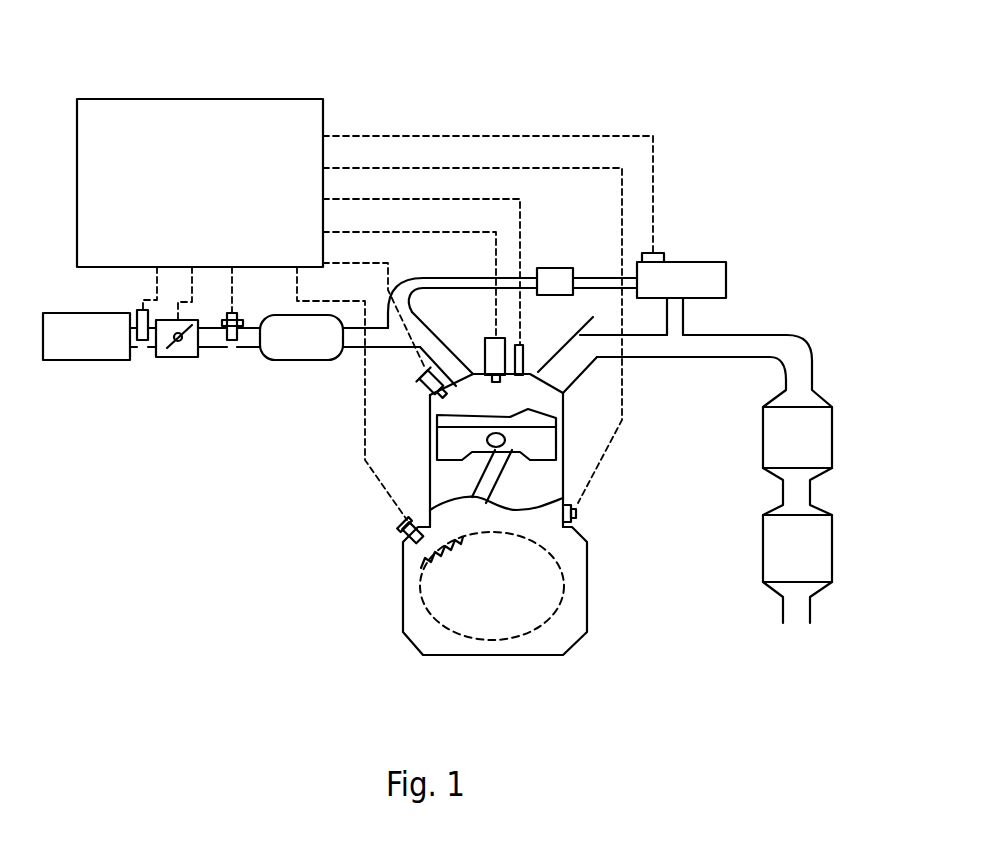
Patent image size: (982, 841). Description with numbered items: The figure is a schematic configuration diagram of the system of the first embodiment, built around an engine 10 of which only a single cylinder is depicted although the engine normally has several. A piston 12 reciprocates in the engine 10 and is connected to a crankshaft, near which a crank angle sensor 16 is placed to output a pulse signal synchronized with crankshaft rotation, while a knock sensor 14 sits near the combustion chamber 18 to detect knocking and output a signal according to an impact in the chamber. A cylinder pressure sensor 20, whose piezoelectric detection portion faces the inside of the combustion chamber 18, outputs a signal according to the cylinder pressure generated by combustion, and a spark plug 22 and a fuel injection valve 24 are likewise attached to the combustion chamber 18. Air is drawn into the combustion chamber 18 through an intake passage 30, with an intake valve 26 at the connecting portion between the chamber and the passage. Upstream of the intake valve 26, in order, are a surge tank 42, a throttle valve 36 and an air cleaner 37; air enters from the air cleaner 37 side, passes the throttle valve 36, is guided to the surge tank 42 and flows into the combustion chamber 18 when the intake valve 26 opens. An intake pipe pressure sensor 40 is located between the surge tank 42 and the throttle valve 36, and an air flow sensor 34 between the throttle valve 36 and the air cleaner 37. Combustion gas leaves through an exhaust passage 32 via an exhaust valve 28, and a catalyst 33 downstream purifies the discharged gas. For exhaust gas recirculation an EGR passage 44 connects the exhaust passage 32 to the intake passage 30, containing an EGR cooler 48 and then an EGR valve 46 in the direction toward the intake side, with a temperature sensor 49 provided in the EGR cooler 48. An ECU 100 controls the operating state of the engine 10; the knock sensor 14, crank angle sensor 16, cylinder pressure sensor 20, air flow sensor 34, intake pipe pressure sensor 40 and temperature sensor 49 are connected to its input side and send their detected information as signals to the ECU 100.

The engine 10 is at (320, 576).
The piston 12 is at (545, 442).
The knock sensor 14 is at (577, 515).
The crank angle sensor 16 is at (405, 527).
The combustion chamber 18 is at (545, 404).
The cylinder pressure sensor 20 is at (423, 387).
The spark plug 22 is at (485, 340).
The fuel injection valve 24 is at (525, 348).
The intake valve 26 is at (415, 292).
The exhaust valve 28 is at (593, 327).
The intake passage 30 is at (388, 360).
The exhaust passage 32 is at (697, 357).
The catalyst 33 is at (751, 400).
The air flow sensor 34 is at (143, 347).
The throttle valve 36 is at (178, 357).
The air cleaner 37 is at (67, 360).
The intake pipe pressure sensor 40 is at (230, 341).
The surge tank 42 is at (268, 360).
The EGR passage 44 is at (592, 277).
The EGR valve 46 is at (548, 268).
The EGR cooler 48 is at (716, 262).
The temperature sensor 49 is at (660, 253).
The ECU 100 is at (175, 99).